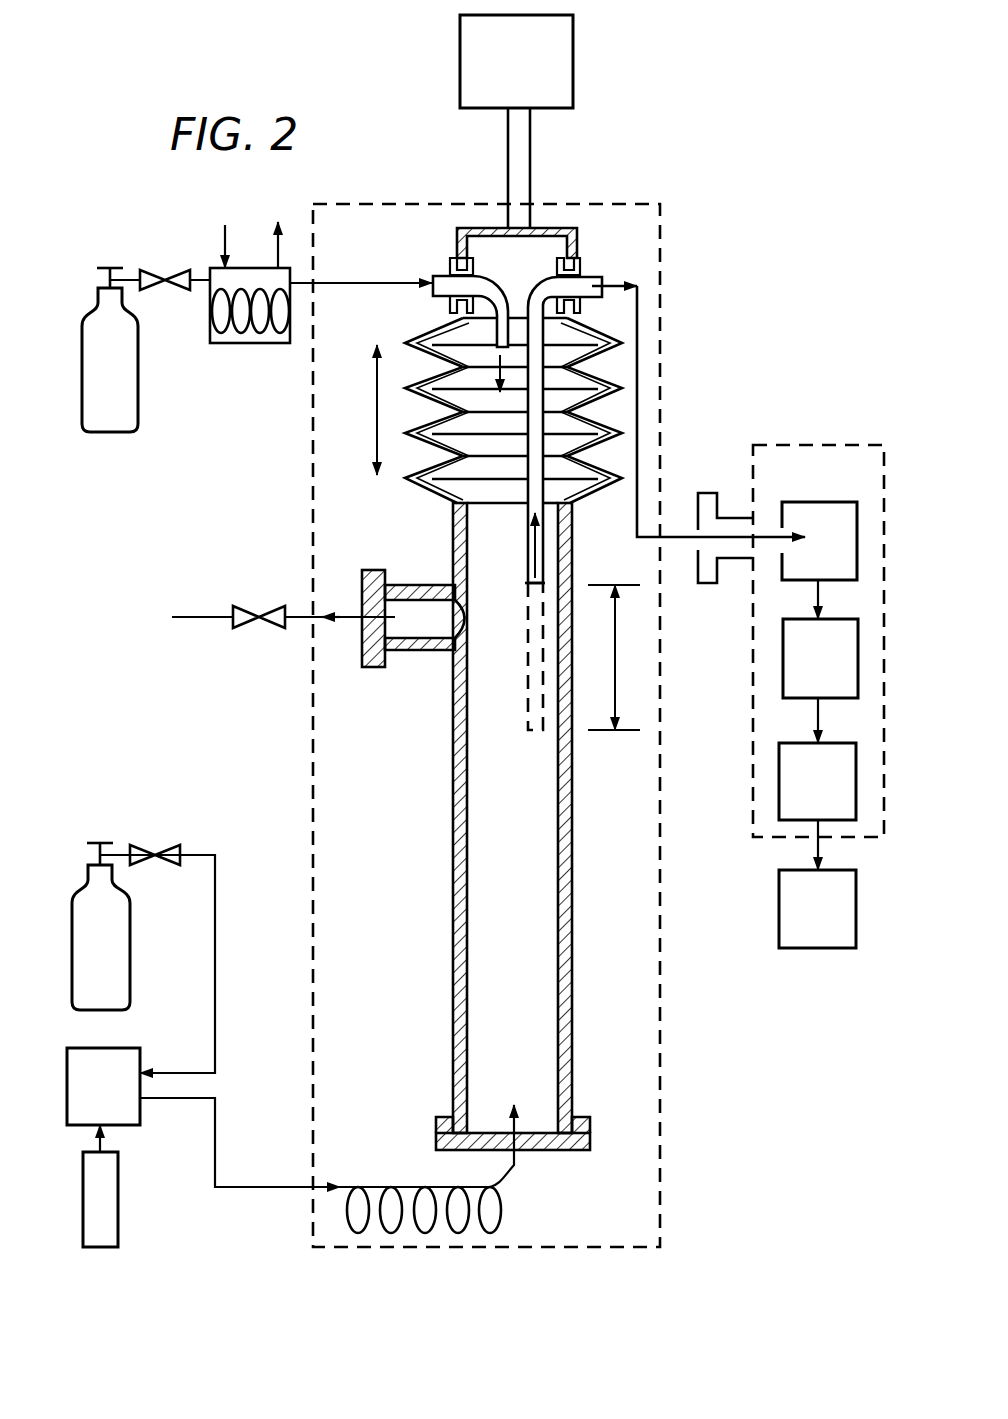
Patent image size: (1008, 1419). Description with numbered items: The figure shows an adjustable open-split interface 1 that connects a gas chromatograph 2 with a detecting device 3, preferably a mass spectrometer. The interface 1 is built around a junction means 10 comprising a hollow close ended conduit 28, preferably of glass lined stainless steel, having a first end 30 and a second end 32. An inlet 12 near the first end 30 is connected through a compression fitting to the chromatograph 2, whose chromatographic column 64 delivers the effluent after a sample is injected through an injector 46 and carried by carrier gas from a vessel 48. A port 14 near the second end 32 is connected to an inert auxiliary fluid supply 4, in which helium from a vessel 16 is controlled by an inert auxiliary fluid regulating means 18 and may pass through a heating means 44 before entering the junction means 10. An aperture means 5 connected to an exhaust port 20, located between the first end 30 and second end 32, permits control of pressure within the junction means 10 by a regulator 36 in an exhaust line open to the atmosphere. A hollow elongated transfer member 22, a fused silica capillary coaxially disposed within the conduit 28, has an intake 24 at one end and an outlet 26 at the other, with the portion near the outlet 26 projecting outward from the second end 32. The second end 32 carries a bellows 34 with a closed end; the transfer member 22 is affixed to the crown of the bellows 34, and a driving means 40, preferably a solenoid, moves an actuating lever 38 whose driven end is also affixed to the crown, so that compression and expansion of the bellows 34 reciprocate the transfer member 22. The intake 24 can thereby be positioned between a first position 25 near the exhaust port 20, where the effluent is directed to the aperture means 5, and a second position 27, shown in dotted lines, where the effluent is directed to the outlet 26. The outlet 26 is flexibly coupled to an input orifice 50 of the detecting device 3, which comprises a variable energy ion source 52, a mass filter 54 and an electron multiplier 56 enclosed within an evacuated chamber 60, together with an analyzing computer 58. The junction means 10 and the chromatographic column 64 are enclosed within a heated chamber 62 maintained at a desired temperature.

The adjustable open-split interface 1 is at (690, 347).
The gas chromatograph 2 is at (203, 1045).
The detecting device 3 is at (779, 614).
The inert auxiliary fluid supply 4 is at (257, 349).
The aperture means 5 is at (228, 602).
The junction means 10 is at (473, 818).
The inlet 12 is at (518, 1152).
The port 14 is at (432, 290).
The vessel 16 is at (138, 380).
The inert auxiliary fluid regulating means 18 is at (117, 268).
The exhaust port 20 is at (358, 618).
The transfer member 22 is at (572, 488).
The intake 24 is at (527, 548).
The first position 25 is at (525, 585).
The outlet 26 is at (602, 285).
The second position 27 is at (527, 730).
The conduit 28 is at (453, 942).
The first end 30 is at (575, 1152).
The second end 32 is at (457, 235).
The bellows 34 is at (408, 458).
The regulator 36 is at (256, 614).
The actuating lever 38 is at (530, 148).
The driving means 40 is at (516, 61).
The heating means 44 is at (245, 345).
The injector 46 is at (118, 1183).
The vessel 48 is at (130, 915).
The input orifice 50 is at (695, 530).
The variable energy ion source 52 is at (819, 560).
The mass filter 54 is at (820, 681).
The electron multiplier 56 is at (817, 806).
The analyzing computer 58 is at (817, 909).
The evacuated chamber 60 is at (753, 670).
The heated chamber 62 is at (660, 1165).
The chromatographic column 64 is at (400, 1187).